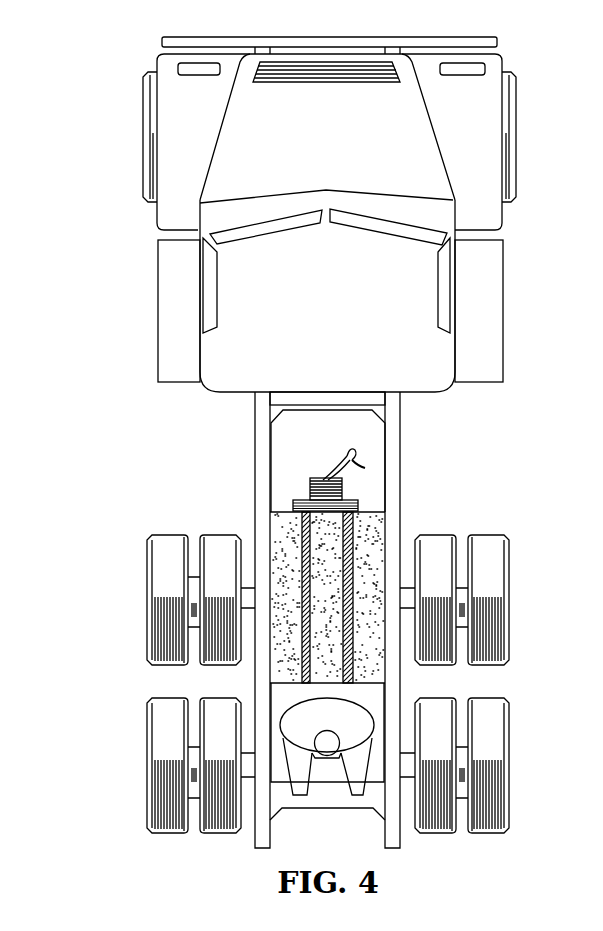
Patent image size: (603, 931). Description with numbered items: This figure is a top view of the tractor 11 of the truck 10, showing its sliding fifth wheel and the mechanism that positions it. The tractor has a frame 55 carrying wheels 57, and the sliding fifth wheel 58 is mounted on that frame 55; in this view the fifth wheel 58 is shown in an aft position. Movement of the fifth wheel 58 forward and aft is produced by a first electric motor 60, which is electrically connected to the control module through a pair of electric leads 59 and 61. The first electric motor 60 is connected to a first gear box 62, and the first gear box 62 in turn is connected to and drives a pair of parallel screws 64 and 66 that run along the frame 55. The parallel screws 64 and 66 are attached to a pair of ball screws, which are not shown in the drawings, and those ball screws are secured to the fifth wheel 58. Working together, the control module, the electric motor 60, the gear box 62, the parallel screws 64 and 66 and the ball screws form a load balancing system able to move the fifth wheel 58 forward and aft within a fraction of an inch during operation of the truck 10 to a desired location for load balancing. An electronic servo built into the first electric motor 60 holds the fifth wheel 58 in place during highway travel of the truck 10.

The truck 10 is at (532, 125).
The tractor 11 is at (423, 340).
The frame 55 is at (393, 468).
The wheels 57 is at (225, 535).
The sliding fifth wheel 58 is at (300, 713).
The electric lead 59 is at (350, 453).
The first electric motor 60 is at (313, 478).
The electric lead 61 is at (363, 468).
The first gear box 62 is at (300, 502).
The parallel screw 64 is at (350, 550).
The parallel screw 66 is at (307, 532).